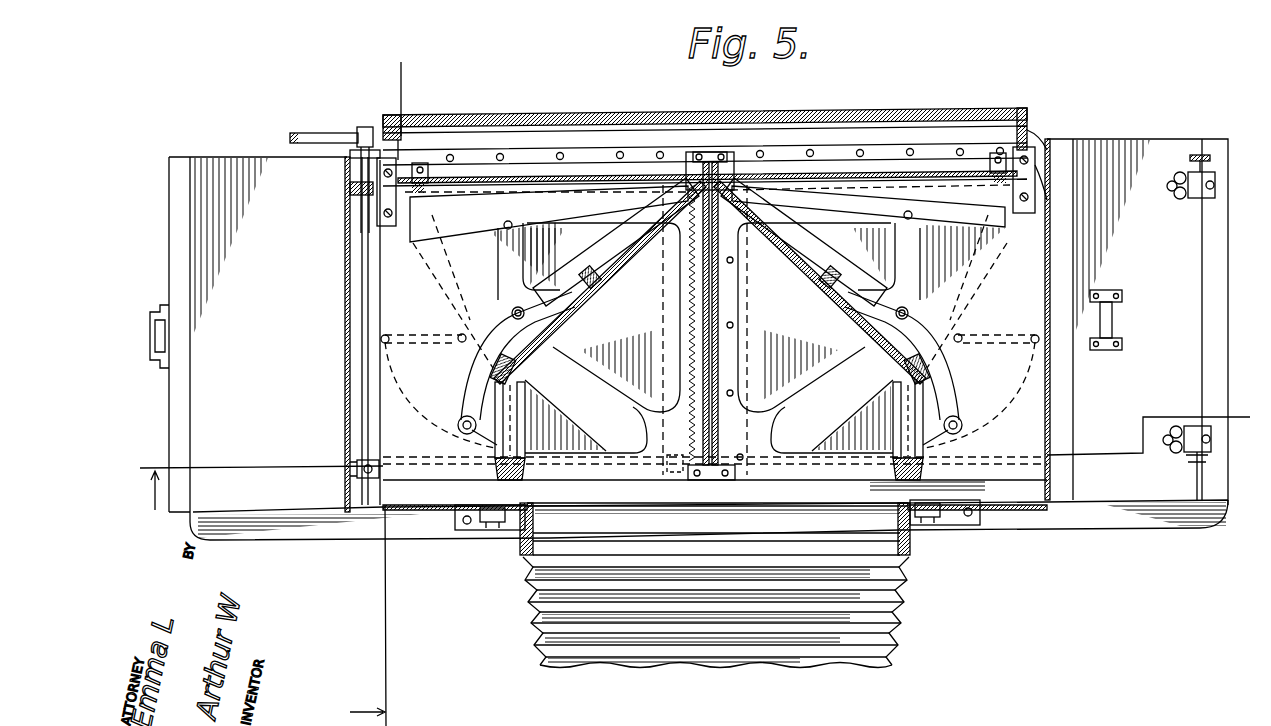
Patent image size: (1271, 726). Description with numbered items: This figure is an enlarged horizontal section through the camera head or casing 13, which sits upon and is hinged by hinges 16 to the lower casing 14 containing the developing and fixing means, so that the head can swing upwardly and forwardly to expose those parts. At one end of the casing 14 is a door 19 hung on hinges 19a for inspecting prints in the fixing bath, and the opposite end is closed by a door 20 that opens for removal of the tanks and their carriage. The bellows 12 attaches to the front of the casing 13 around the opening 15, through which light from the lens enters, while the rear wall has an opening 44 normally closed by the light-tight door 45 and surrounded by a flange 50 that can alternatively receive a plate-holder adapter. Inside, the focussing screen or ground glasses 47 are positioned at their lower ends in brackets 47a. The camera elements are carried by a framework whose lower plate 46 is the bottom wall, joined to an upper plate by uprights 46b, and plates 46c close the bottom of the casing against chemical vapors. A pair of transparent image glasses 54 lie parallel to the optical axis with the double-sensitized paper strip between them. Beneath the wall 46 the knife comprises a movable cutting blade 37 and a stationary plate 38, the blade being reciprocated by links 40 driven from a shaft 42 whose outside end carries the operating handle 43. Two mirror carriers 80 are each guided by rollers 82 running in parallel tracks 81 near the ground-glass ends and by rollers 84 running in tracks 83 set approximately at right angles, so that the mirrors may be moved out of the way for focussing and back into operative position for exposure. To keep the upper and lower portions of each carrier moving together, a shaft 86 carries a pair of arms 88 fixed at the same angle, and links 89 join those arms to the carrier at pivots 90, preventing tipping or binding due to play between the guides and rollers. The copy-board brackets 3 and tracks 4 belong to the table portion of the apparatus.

The brackets 3 is at (377, 381).
The tracks 4 is at (683, 454).
The bellows 12 is at (535, 617).
The camera head or casing 13 is at (347, 322).
The casing 14 is at (258, 334).
The opening 15 is at (583, 507).
The hinges 16 is at (480, 527).
The door 19 is at (1136, 322).
The hinges 19a is at (1265, 193).
The door 20 is at (167, 428).
The movable cutting blade 37 is at (680, 313).
The stationary plate 38 is at (871, 317).
The links 40 is at (372, 522).
The shaft 42 is at (372, 428).
The operating handle 43 is at (318, 145).
The opening 44 is at (792, 135).
The door 45 is at (708, 150).
The lower plate 46 is at (647, 418).
The uprights 46b is at (380, 212).
The plates 46c is at (596, 484).
The focussing screen or ground glasses 47 is at (505, 162).
The brackets 47a is at (464, 153).
The flange 50 is at (1038, 135).
The transparent image glasses 54 is at (717, 365).
The carriers 80 is at (832, 275).
The guides or tracks 81 is at (486, 238).
The rollers or projections 82 is at (642, 263).
The guides or tracks 83 is at (905, 413).
The rollers or projections 84 is at (523, 371).
The shaft 86 is at (458, 429).
The arms 88 is at (480, 385).
The links 89 is at (710, 361).
The pivot connection 90 is at (592, 270).